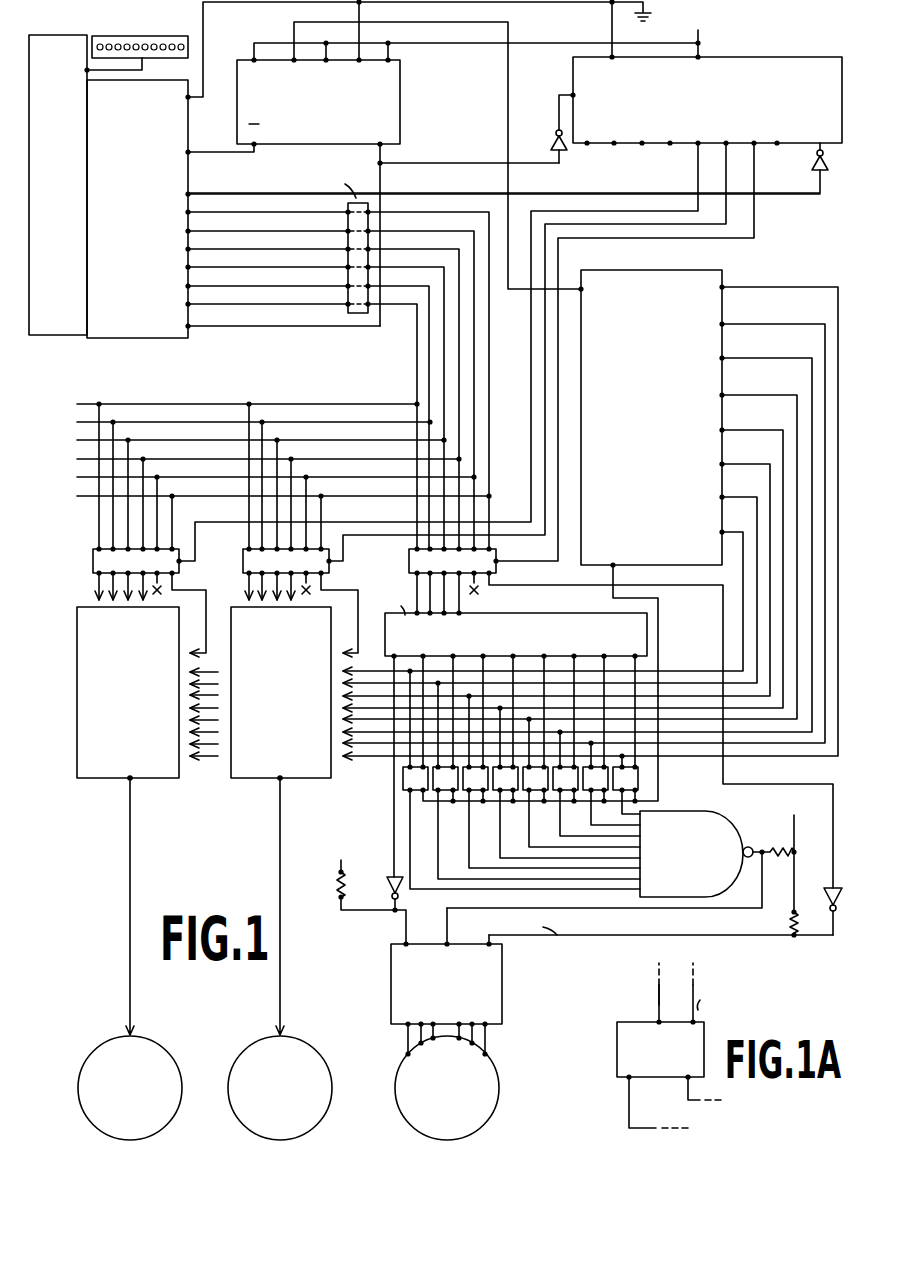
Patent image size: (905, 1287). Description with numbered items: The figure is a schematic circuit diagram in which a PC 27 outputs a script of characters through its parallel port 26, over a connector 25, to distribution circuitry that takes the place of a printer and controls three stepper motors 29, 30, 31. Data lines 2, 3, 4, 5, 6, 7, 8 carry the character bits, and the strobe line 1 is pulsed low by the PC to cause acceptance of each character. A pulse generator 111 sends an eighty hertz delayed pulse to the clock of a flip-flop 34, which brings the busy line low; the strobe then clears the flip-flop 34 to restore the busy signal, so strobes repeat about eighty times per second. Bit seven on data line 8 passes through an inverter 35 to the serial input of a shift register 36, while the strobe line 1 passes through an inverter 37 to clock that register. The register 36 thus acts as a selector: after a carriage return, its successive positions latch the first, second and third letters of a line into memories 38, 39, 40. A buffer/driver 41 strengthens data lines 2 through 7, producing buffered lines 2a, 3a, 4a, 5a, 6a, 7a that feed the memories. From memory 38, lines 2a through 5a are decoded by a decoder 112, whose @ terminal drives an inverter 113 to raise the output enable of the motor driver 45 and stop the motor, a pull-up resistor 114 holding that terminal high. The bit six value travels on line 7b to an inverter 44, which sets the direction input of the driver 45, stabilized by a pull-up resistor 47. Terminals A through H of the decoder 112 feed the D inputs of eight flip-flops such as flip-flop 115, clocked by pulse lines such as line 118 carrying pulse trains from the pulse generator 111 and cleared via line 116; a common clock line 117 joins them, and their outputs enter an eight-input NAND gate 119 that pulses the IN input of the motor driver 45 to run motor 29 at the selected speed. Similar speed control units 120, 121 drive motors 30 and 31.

In FIG. 1, the PC 27 is at (45, 33).
In FIG. 1, the connector cable 25 is at (132, 34).
In FIG. 1, the parallel port 26 is at (121, 343).
In FIG. 1, the strobe line 1 is at (202, 332).
In FIG. 1, the data line 2 is at (218, 308).
In FIG. 1, the data line 3 is at (238, 290).
In FIG. 1, the data line 4 is at (258, 270).
In FIG. 1, the data line 5 is at (233, 247).
In FIG. 1, the data line 6 is at (255, 229).
In FIG. 1, the data line 7 is at (272, 210).
In FIG. 1, the data line 8 is at (300, 193).
In FIG. 1, the data line 2a is at (415, 312).
In FIG. 1, the data line 3a is at (425, 335).
In FIG. 1, the data line 4a is at (440, 363).
In FIG. 1, the data line 5a is at (464, 303).
In FIG. 1, the data line 6a is at (477, 335).
In FIG. 1, the data line 7a is at (490, 372).
In FIG. 1, the line 7b is at (536, 584).
In FIG. 1, the flip-flop 34 is at (233, 88).
In FIG. 1, the inverter 35 is at (832, 163).
In FIG. 1, the shift register 36 is at (773, 54).
In FIG. 1, the inverter 37 is at (557, 131).
In FIG. 1, the memory 38 is at (409, 556).
In FIG. 1, the memory 39 is at (243, 553).
In FIG. 1, the memory 40 is at (93, 553).
In FIG. 1, the buffer/driver 41 is at (359, 318).
In FIG. 1, the inverter 44 is at (827, 898).
In FIG. 1, the motor driver 45 is at (388, 964).
In FIG. 1, the pull-up resistor 47 is at (797, 916).
In FIG. 1, the motor 29 is at (496, 1062).
In FIG. 1, the motor 30 is at (323, 1062).
In FIG. 1, the motor 31 is at (167, 1052).
In FIG. 1, the pulse generator 111 is at (656, 268).
In FIG. 1, the decoder 112 is at (568, 612).
In FIG. 1, the inverter 113 is at (388, 888).
In FIG. 1, the pull-up resistor 114 is at (336, 886).
In FIG. 1, the flip-flop 115 is at (402, 783).
In FIG. 1A, the flip-flop 115 is at (614, 1085).
In FIG. 1, the line 116 is at (659, 640).
In FIG. 1, the latch clock line 117 is at (456, 803).
In FIG. 1, the pulse line 118 is at (666, 671).
In FIG. 1A, the pulse line 118 is at (657, 1009).
In FIG. 1, the eight-input NAND gate 119 is at (686, 810).
In FIG. 1, the speed control unit 120 is at (256, 782).
In FIG. 1, the speed control unit 121 is at (103, 782).